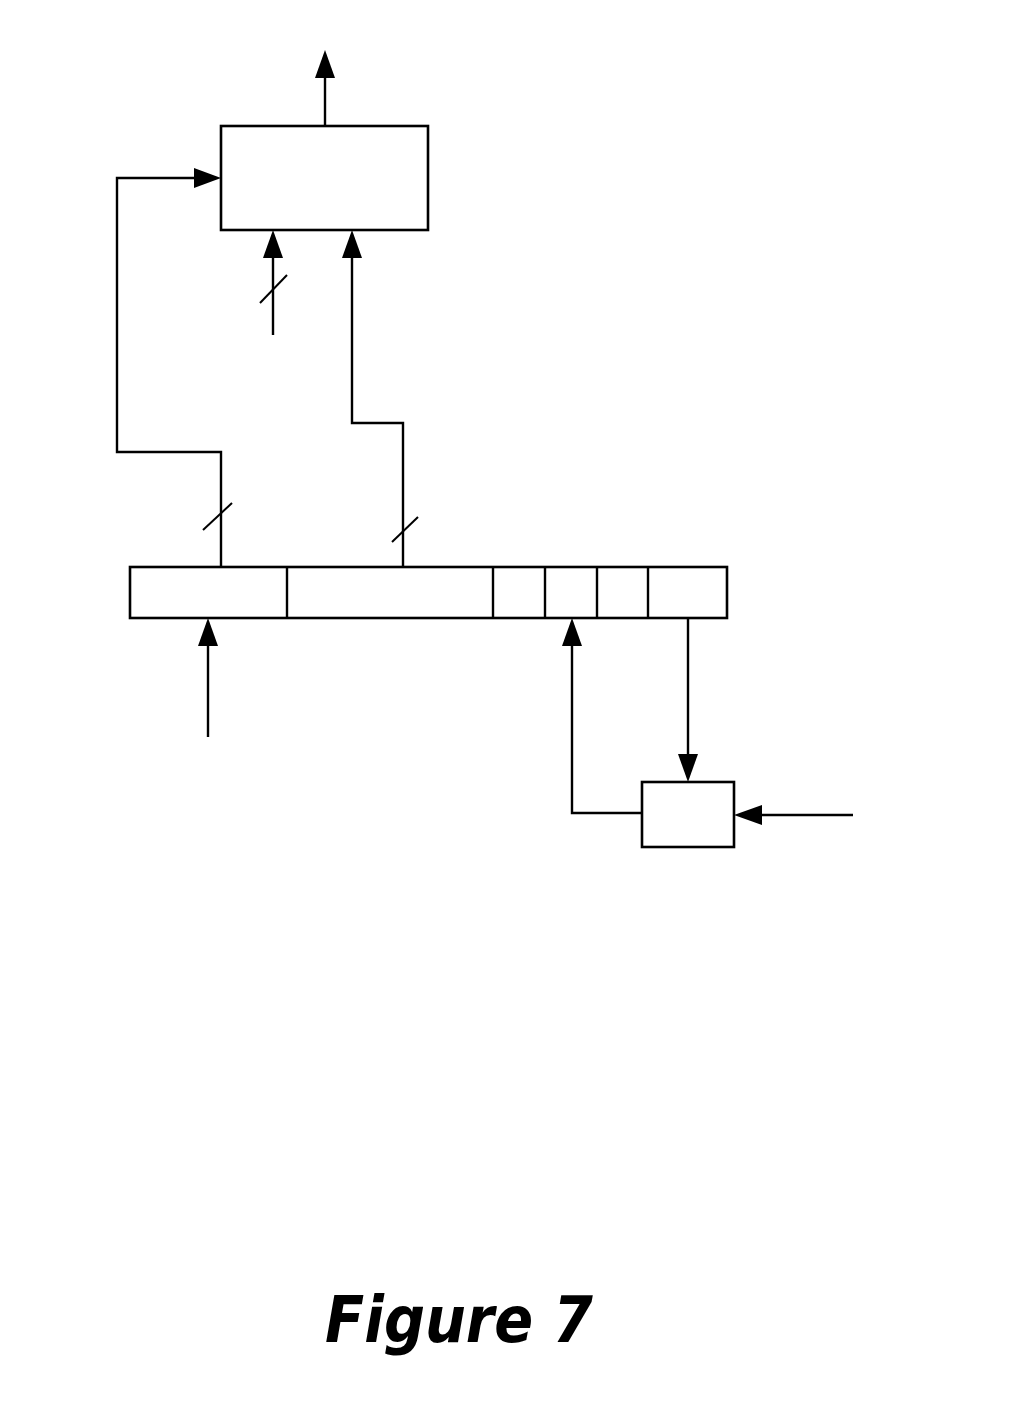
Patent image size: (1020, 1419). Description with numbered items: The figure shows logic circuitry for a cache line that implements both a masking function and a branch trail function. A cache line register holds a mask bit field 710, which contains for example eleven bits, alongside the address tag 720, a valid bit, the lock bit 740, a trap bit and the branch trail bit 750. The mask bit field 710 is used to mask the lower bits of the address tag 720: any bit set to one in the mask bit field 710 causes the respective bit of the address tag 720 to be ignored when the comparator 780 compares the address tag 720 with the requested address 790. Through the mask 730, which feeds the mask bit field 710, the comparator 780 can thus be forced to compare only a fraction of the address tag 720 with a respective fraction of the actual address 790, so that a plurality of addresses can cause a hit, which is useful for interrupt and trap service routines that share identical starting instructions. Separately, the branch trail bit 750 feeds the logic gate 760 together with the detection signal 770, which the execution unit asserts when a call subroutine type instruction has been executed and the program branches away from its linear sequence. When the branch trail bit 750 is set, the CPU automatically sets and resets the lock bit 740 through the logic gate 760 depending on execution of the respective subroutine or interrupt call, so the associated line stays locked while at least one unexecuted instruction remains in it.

The mask bit field 710 is at (182, 567).
The address tag 720 is at (428, 618).
The mask 730 is at (207, 710).
The lock bit 740 is at (572, 567).
The branch trail bit 750 is at (727, 593).
The logic gate 760 is at (753, 773).
The detection signal 770 is at (826, 815).
The comparator 780 is at (428, 152).
The requested address 790 is at (277, 304).